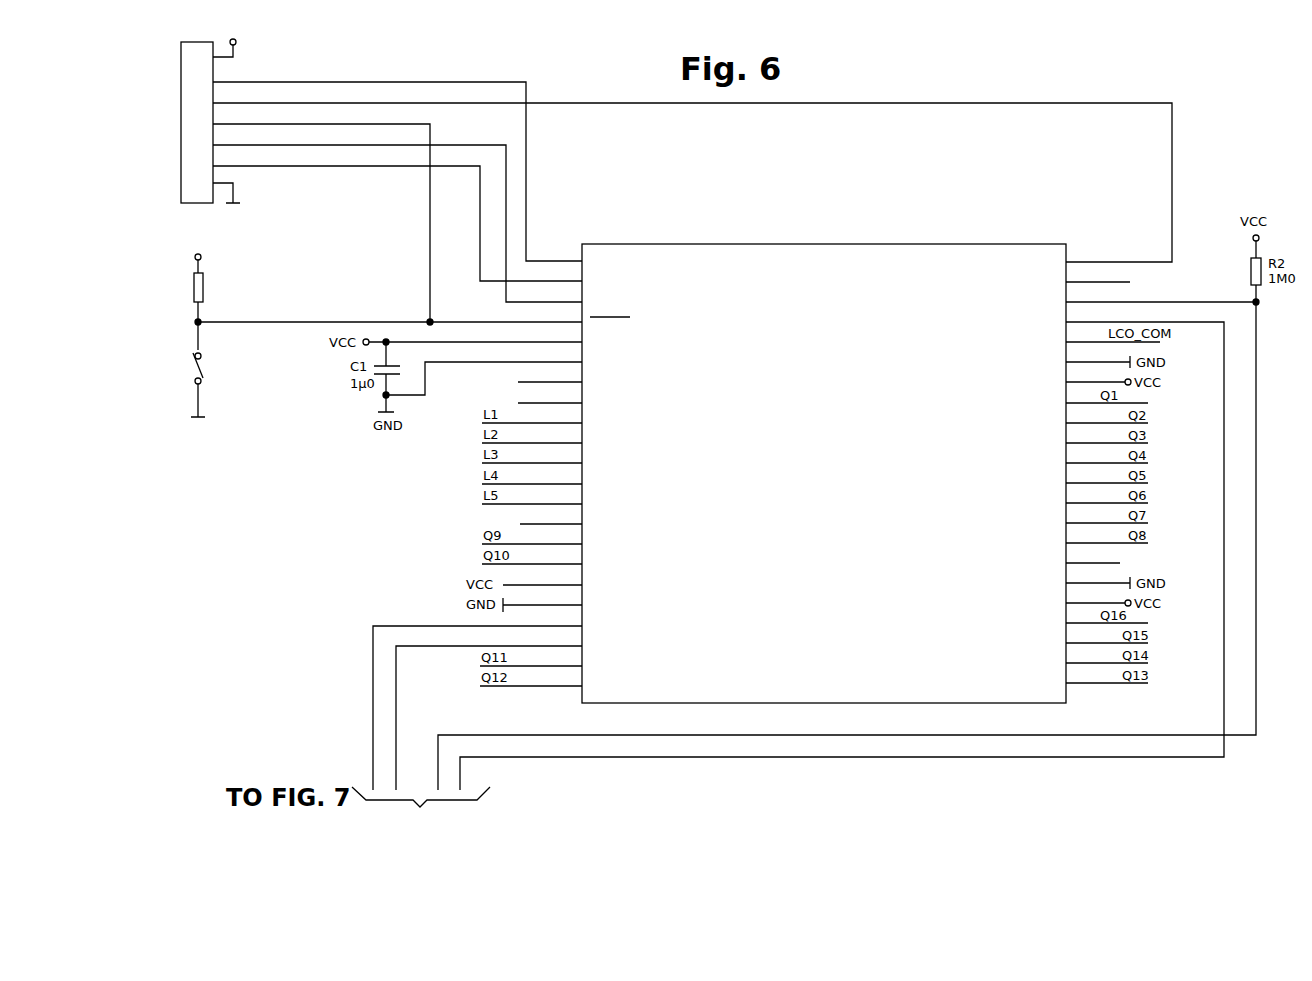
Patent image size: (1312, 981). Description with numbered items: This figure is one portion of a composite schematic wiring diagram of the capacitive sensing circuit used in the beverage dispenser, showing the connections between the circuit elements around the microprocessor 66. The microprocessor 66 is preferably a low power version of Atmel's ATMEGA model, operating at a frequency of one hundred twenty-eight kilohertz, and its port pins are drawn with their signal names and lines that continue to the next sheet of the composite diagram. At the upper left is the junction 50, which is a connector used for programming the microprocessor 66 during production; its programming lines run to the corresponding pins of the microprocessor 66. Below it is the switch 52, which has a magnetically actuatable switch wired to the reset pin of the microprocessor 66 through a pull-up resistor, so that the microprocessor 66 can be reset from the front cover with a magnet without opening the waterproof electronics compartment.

The junction 50 is at (185, 108).
The switch 52 is at (178, 316).
The microprocessor 66 is at (804, 258).